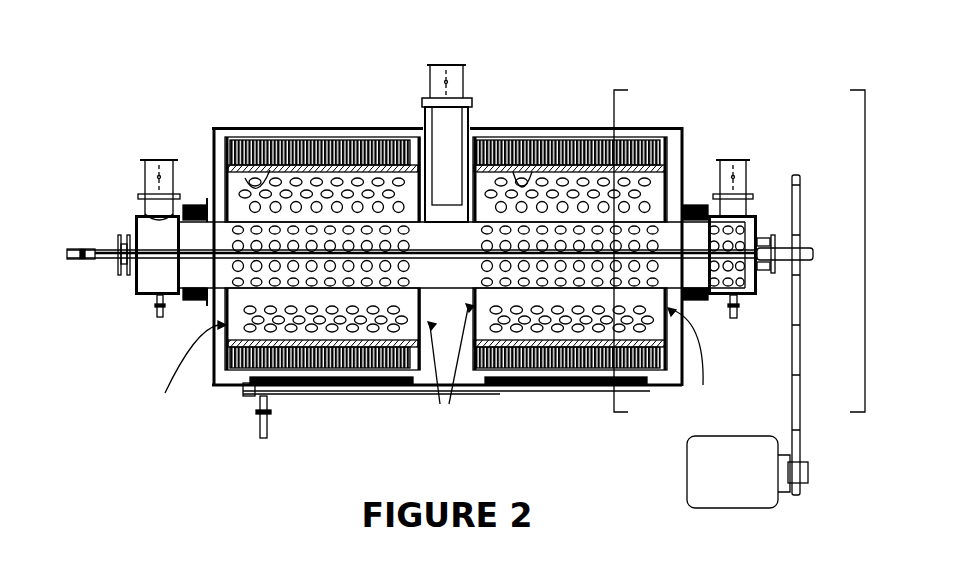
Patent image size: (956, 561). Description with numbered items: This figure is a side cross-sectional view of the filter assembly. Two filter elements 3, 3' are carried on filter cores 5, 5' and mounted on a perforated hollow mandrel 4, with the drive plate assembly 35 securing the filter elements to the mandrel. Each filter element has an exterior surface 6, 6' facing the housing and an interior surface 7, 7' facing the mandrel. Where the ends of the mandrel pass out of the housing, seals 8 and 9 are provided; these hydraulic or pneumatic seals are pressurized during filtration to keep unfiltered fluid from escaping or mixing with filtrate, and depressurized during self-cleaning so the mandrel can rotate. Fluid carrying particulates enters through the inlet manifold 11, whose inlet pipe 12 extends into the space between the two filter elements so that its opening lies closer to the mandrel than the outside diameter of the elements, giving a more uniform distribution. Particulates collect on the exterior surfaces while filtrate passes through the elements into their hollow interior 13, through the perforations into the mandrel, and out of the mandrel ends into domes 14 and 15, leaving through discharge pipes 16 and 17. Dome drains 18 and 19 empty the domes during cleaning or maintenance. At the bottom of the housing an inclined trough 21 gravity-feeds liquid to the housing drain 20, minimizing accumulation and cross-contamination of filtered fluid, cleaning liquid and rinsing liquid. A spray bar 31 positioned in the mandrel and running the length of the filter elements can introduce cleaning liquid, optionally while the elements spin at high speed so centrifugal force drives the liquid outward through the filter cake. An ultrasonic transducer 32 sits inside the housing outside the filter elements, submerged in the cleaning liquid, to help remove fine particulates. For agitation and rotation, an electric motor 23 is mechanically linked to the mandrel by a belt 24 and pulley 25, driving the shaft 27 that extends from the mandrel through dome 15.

The filter element 3 is at (322, 195).
The filter element 3' is at (577, 204).
The mandrel 4 is at (363, 235).
The filter core 5 is at (323, 181).
The filter core 5' is at (569, 185).
The exterior surface 6 is at (313, 190).
The exterior surface 6' is at (568, 196).
The interior surface 7 is at (298, 189).
The interior surface 7' is at (569, 192).
The seal 8 is at (200, 205).
The seal 9 is at (687, 203).
The inlet manifold 11 is at (447, 82).
The inlet pipe 12 is at (438, 178).
The hollow interior 13 is at (588, 392).
The dome 14 is at (135, 285).
The dome 15 is at (757, 223).
The discharge pipe 16 is at (155, 170).
The discharge pipe 17 is at (738, 170).
The dome drain 18 is at (160, 312).
The dome drain 19 is at (737, 318).
The housing drain 20 is at (258, 413).
The inclined trough 21 is at (295, 393).
The electric motor 23 is at (715, 475).
The belt 24 is at (797, 430).
The pulley 25 is at (800, 223).
The shaft 27 is at (775, 253).
The spray bar 31 is at (112, 250).
The ultrasonic transducer 32 is at (355, 393).
The drive plate assembly 35 is at (432, 370).